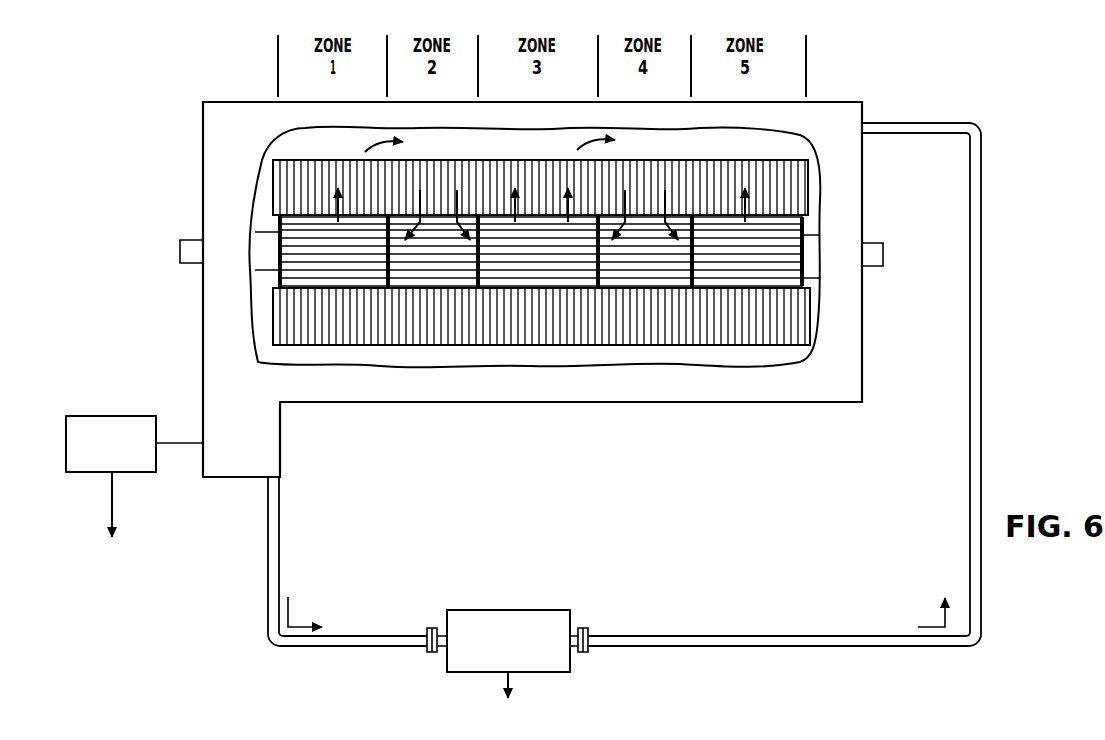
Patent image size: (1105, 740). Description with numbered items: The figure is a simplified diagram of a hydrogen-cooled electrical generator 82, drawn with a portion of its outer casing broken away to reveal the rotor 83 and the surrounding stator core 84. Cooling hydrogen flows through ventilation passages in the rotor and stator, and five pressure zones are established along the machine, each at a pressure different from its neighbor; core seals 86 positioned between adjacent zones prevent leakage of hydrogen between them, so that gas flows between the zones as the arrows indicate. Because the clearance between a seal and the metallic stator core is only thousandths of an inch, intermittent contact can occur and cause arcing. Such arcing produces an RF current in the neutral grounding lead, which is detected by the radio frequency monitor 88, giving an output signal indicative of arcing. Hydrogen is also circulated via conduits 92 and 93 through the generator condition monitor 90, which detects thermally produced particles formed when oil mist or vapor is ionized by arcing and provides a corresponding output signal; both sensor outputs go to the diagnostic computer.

The electrical generator 82 is at (203, 140).
The rotor 83 is at (298, 246).
The stator core 84 is at (285, 185).
The core seals 86 is at (469, 160).
The radio frequency monitor (RFM) 88 is at (109, 416).
The generator condition monitor (GCM) 90 is at (517, 610).
The conduit 92 is at (357, 636).
The conduit 93 is at (688, 636).